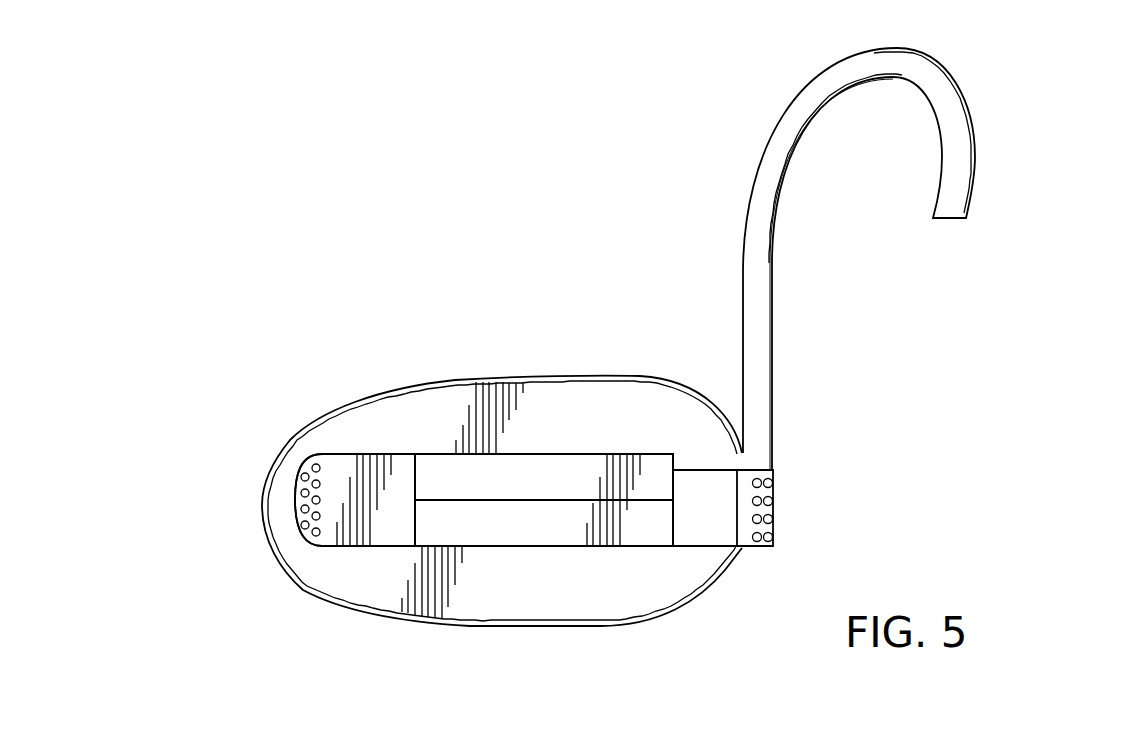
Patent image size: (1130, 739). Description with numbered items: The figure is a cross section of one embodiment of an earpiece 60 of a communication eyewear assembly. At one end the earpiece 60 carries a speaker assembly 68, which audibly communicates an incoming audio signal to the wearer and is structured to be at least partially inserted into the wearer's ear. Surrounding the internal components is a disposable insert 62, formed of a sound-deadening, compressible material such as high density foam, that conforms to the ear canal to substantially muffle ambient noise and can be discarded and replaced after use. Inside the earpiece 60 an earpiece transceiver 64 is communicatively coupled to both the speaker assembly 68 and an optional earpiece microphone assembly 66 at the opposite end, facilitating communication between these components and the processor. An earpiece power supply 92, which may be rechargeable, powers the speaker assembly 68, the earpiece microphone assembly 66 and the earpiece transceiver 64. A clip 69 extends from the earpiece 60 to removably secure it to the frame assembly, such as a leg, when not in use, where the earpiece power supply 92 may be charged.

The earpiece 60 is at (465, 243).
The disposable insert 62 is at (533, 383).
The earpiece transceiver 64 is at (528, 537).
The earpiece microphone assembly 66 is at (775, 507).
The speaker assembly 68 is at (298, 512).
The clip 69 is at (975, 158).
The earpiece power supply 92 is at (501, 489).